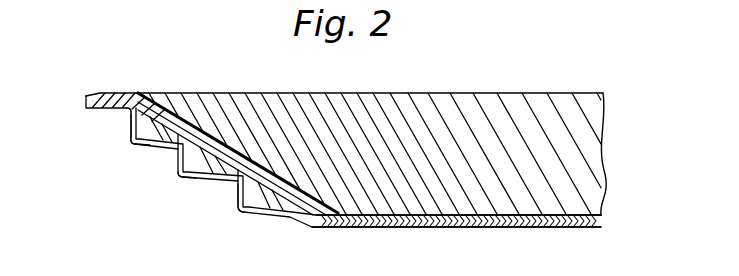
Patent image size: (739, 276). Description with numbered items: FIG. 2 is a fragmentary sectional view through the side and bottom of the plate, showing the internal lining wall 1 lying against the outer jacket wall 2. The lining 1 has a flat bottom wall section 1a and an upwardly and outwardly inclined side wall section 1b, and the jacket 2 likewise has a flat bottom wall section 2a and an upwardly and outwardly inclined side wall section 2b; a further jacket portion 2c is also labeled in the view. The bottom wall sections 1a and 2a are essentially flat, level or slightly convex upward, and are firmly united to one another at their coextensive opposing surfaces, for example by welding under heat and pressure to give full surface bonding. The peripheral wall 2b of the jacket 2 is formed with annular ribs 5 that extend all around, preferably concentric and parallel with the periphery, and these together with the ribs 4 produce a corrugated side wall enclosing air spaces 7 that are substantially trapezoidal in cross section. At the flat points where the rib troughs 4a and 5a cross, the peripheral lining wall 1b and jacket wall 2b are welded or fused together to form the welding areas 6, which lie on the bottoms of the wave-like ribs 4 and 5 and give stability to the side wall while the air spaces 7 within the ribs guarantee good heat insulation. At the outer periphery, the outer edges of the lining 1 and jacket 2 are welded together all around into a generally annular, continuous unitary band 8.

The internal lining wall 1 is at (468, 160).
The flat bottom wall section of lining 1a is at (600, 208).
The inclined side wall section of lining 1b is at (207, 123).
The outer jacket wall 2 is at (433, 223).
The flat bottom wall section of jacket 2a is at (602, 222).
The inclined side wall section of jacket 2b is at (135, 148).
The third step wall of bottom sheet 2c is at (256, 211).
The ribs 4 is at (240, 162).
The rib trough 4a is at (140, 122).
The annular ribs 5 is at (134, 138).
The rib trough 5a is at (178, 148).
The welding areas 6 is at (180, 142).
The air spaces 7 is at (243, 192).
The unitary band at outer periphery 8 is at (93, 93).